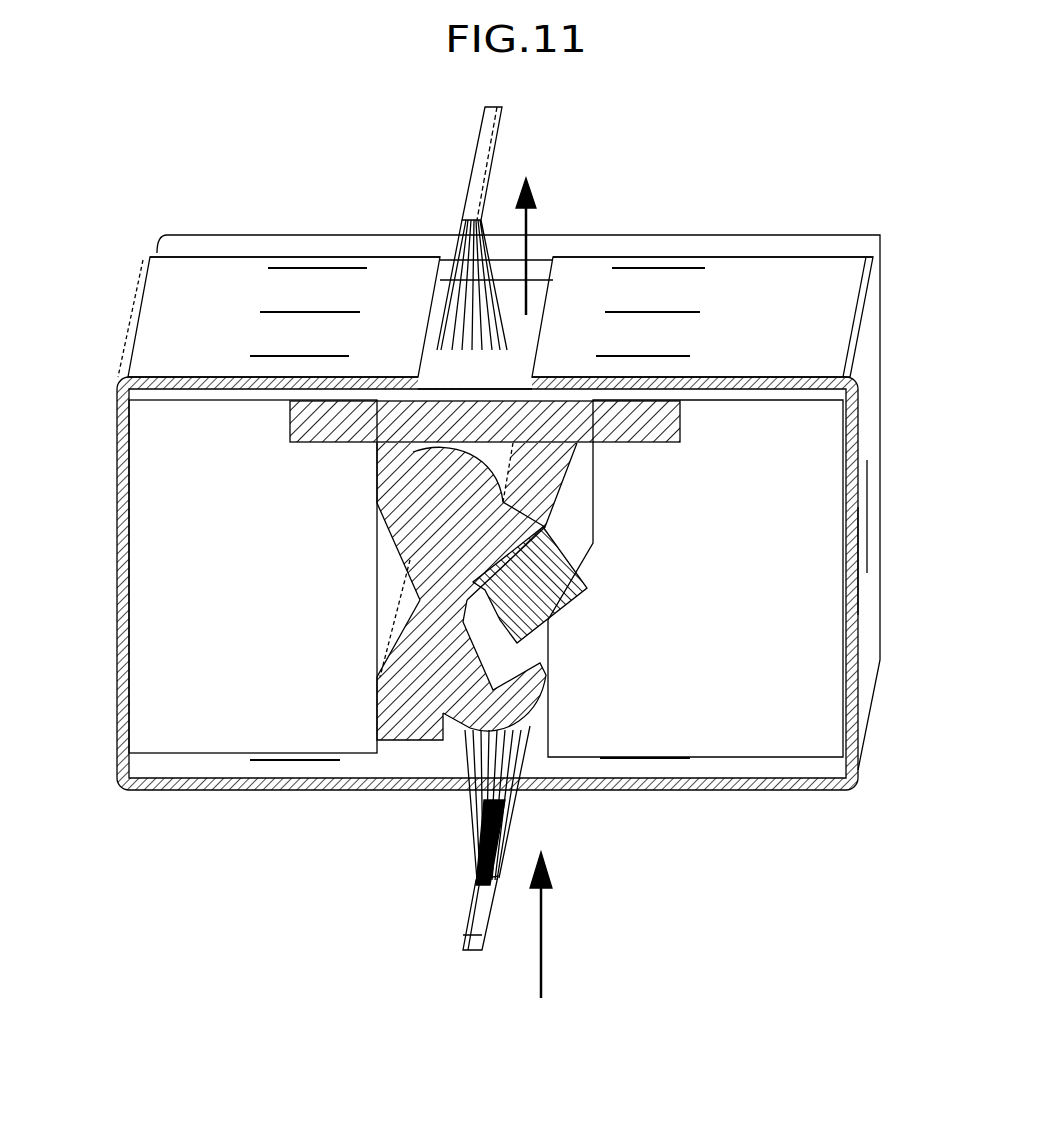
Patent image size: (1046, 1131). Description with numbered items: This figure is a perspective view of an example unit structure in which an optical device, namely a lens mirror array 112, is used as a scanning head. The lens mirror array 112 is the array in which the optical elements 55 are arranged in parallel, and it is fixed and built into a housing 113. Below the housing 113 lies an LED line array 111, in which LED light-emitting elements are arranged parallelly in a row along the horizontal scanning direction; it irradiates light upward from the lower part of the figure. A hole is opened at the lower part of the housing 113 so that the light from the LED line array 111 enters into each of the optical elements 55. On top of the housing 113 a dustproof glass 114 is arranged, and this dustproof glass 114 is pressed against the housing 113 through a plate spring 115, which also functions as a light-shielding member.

The optical element 55 is at (427, 733).
The LED line array 111 is at (472, 888).
The lens mirror array 112 is at (412, 632).
The housing 113 is at (768, 730).
The dustproof glass 114 is at (662, 432).
The plate spring 115 is at (393, 278).